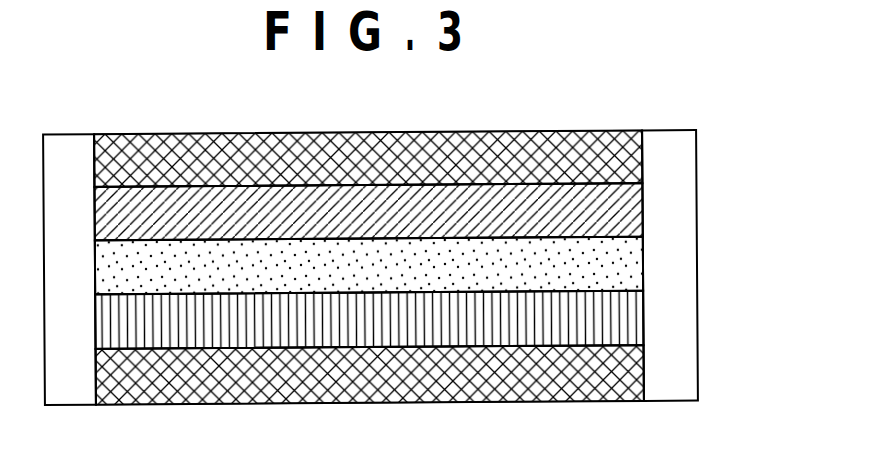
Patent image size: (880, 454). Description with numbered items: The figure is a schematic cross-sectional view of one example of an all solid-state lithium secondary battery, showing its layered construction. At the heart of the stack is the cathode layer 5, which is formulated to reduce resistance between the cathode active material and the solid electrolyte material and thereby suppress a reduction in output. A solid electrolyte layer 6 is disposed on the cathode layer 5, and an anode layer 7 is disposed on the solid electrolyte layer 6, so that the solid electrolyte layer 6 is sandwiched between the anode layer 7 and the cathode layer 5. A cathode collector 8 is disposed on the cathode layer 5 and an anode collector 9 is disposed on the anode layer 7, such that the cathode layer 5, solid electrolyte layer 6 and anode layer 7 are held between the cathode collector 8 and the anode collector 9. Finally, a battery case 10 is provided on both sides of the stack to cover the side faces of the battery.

The battery case 10 is at (70, 192).
The anode collector 9 is at (641, 150).
The anode layer 7 is at (597, 218).
The solid electrolyte layer 6 is at (597, 267).
The cathode layer 5 is at (597, 315).
The cathode collector 8 is at (605, 370).